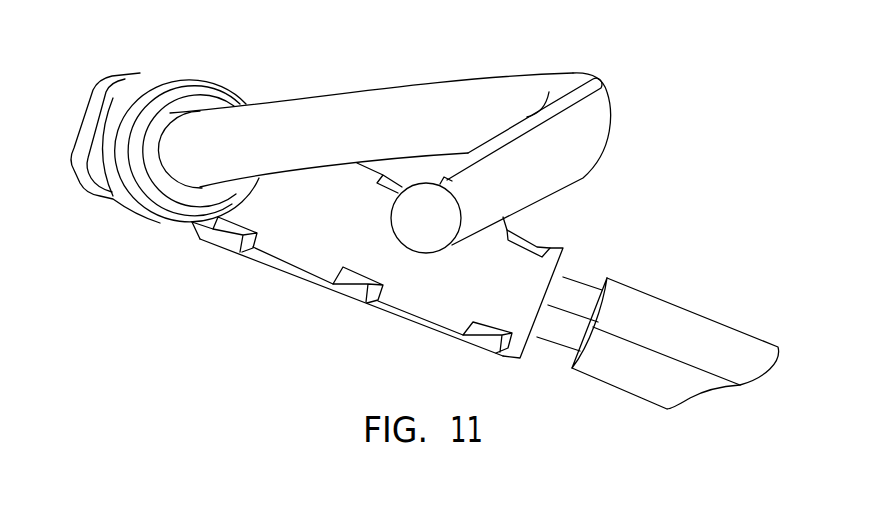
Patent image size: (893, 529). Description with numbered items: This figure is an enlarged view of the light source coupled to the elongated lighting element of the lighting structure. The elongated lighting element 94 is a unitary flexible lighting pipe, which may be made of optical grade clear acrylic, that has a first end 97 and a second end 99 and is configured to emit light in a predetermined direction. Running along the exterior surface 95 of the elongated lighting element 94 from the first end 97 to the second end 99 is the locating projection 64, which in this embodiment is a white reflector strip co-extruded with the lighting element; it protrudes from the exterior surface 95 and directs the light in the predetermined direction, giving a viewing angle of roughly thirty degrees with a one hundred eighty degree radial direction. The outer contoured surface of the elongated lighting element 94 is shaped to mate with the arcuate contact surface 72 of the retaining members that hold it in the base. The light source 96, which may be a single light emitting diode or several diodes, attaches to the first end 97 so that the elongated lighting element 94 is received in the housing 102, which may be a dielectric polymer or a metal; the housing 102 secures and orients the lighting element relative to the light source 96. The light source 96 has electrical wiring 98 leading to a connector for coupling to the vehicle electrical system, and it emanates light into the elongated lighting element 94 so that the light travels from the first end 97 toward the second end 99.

The locating projection 64 is at (603, 82).
The arcuate contact surface 72 is at (357, 110).
The elongated lighting element 94 is at (431, 136).
The exterior surface 95 is at (508, 82).
The light source 96 is at (344, 295).
The first end 97 is at (190, 135).
The electrical wiring 98 is at (678, 307).
The second end 99 is at (425, 232).
The housing 102 is at (272, 267).